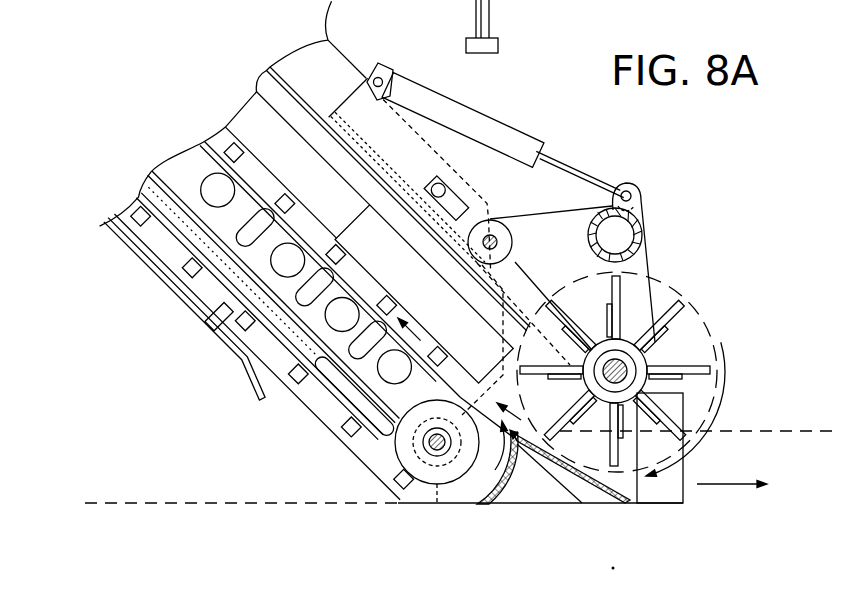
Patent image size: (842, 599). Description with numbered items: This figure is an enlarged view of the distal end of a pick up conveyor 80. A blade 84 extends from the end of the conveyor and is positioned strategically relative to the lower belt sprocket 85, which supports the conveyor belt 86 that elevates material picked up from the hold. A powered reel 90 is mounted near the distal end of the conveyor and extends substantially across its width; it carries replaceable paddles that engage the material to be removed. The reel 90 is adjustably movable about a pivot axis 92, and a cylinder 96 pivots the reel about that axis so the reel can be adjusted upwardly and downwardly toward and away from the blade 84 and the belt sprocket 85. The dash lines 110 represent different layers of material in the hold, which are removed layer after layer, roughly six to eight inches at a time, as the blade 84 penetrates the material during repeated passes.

The pick up conveyor 80 is at (655, 158).
The blade 84 is at (585, 490).
The lower belt sprocket 85 is at (444, 444).
The conveyor belt 86 is at (312, 243).
The powered reel 90 is at (664, 296).
The pivot axis 92 is at (497, 243).
The cylinder 96 is at (512, 125).
The dash lines 110 is at (158, 502).